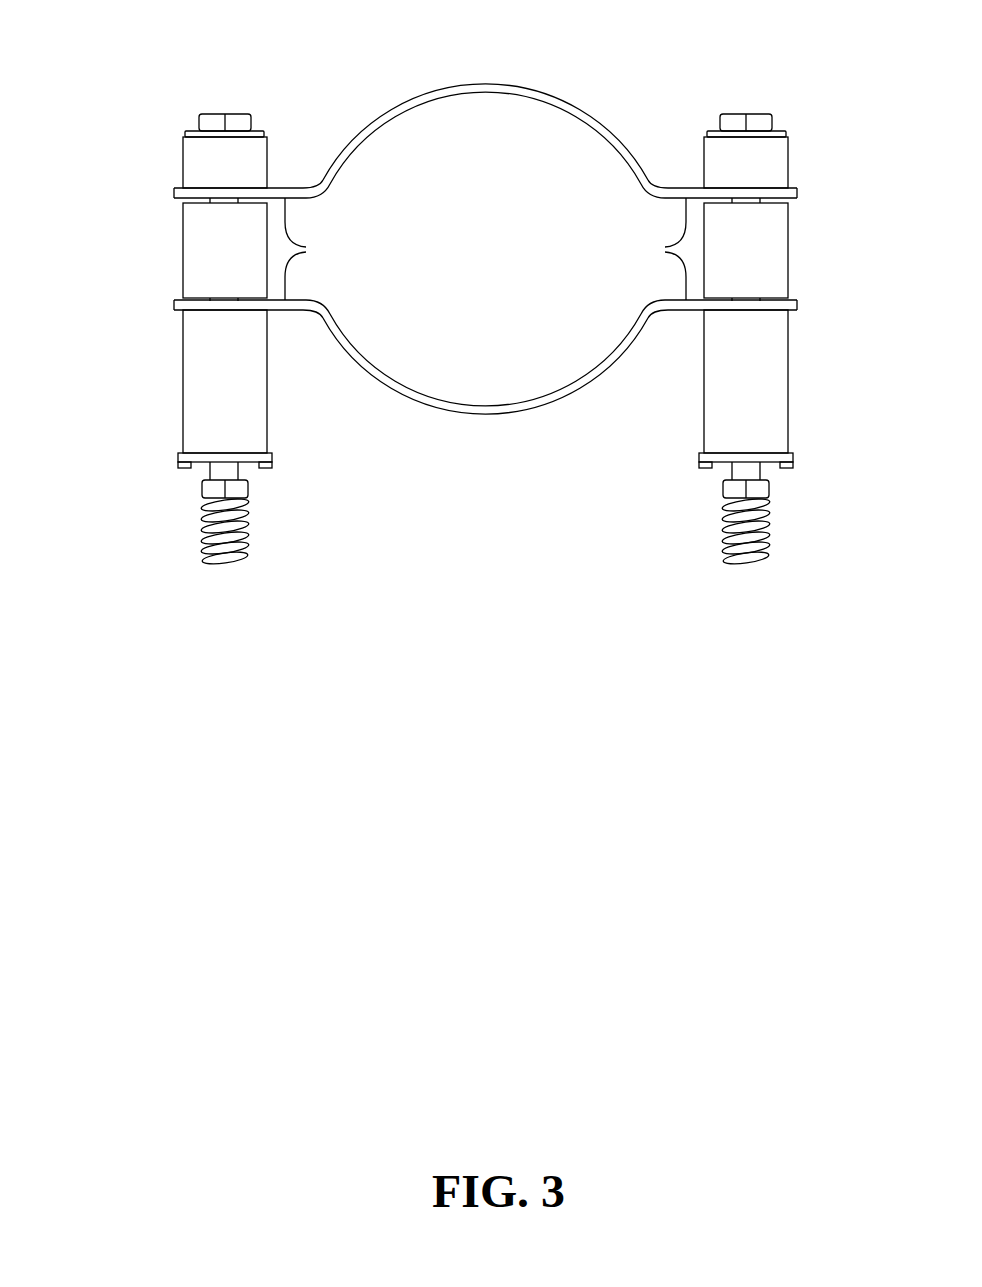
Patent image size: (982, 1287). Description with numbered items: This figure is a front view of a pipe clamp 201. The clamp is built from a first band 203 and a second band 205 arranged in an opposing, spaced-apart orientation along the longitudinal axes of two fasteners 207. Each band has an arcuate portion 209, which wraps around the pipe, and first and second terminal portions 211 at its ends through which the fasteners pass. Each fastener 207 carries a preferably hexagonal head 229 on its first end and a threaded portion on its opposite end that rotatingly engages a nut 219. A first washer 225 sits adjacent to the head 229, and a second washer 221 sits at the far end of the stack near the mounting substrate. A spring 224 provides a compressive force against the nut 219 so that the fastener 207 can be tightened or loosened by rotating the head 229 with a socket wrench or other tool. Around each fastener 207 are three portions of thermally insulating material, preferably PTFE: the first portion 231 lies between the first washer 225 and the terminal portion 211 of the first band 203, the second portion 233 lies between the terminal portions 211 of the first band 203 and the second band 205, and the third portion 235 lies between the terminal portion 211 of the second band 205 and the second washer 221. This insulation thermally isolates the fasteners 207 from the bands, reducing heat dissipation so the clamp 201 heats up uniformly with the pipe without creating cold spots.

The pipe clamp 201 is at (106, 63).
The first band 203 is at (620, 95).
The second band 205 is at (620, 405).
The fastener 207 is at (725, 472).
The arcuate portion 209 is at (490, 83).
The terminal portion 211 is at (485, 249).
The nut 219 is at (769, 490).
The second washer 221 is at (792, 458).
The spring 224 is at (772, 540).
The first washer 225 is at (786, 134).
The head 229 is at (772, 122).
The first portion of thermally insulating material 231 is at (788, 165).
The second portion of thermally insulating material 233 is at (788, 250).
The third portion of thermally insulating material 235 is at (788, 383).